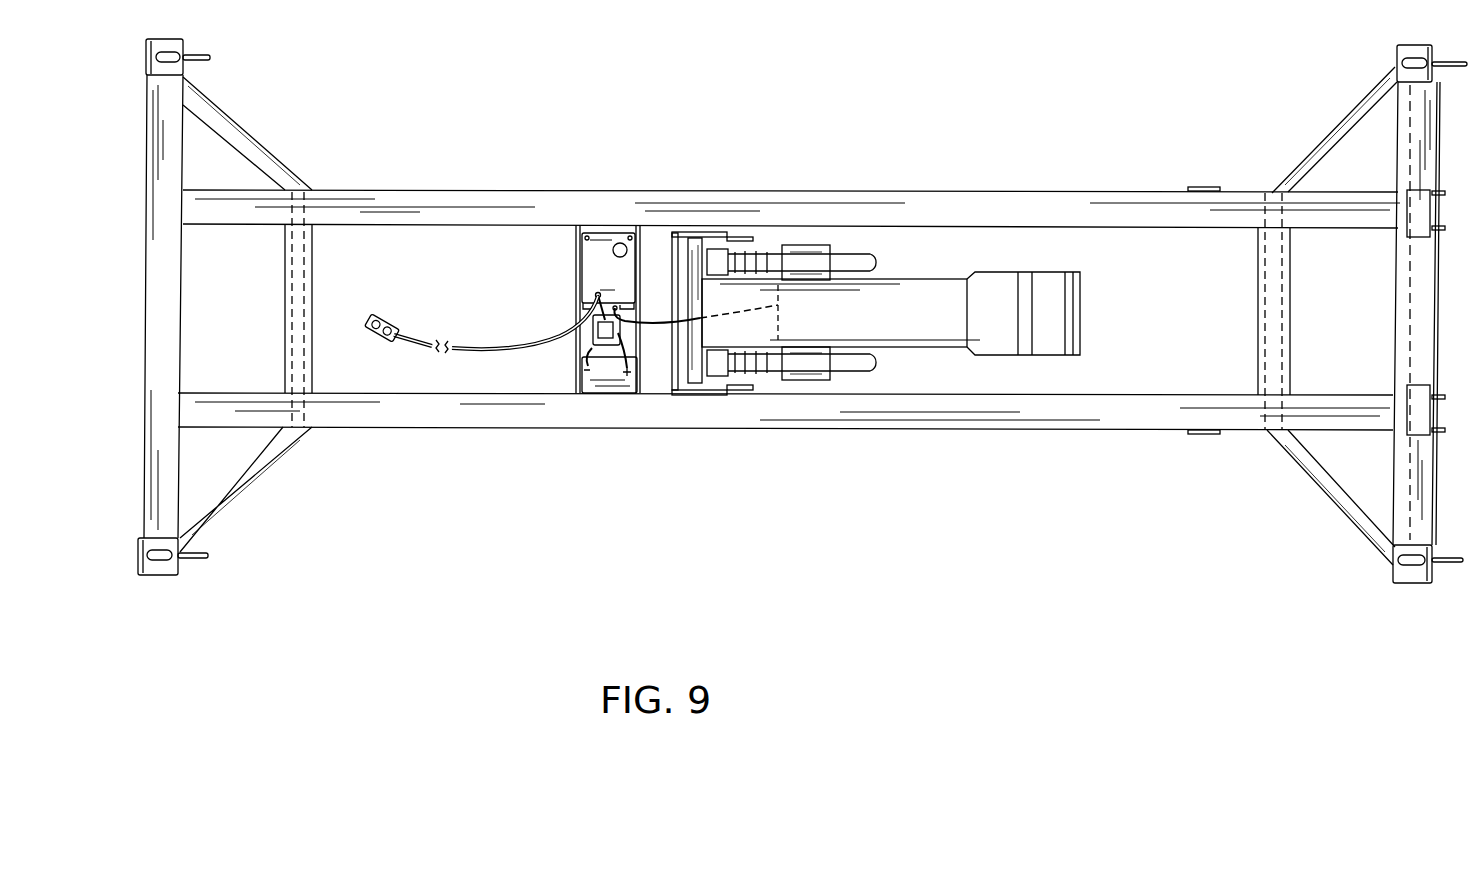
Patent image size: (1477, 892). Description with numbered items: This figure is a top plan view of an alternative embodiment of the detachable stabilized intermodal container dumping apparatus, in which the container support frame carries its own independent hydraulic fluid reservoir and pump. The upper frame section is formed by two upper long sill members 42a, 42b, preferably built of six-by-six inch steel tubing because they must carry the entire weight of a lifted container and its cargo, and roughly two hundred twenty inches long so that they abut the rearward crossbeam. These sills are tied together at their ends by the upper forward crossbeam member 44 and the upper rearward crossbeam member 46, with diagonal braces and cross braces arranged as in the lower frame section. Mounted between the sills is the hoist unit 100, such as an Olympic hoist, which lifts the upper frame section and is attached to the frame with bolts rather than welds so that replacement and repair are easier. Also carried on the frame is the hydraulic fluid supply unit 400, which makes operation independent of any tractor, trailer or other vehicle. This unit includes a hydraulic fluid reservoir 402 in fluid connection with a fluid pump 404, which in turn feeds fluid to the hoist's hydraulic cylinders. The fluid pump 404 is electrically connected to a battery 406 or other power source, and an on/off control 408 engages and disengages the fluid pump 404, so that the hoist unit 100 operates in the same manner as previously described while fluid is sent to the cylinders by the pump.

The upper forward crossbeam member 44 is at (167, 145).
The upper rearward crossbeam member 46 is at (1415, 135).
The upper long sill member 42a is at (1082, 432).
The upper long sill member 42b is at (1081, 203).
The hoist unit 100 is at (918, 300).
The hydraulic fluid supply unit 400 is at (562, 353).
The hydraulic fluid reservoir 402 is at (597, 258).
The fluid pump 404 is at (620, 320).
The battery 406 is at (607, 393).
The on/off control 408 is at (383, 313).